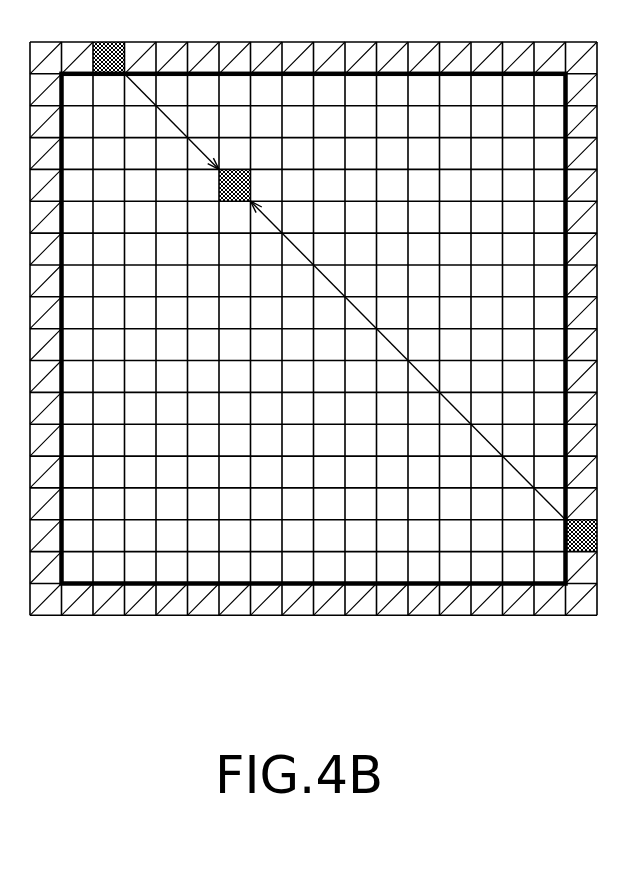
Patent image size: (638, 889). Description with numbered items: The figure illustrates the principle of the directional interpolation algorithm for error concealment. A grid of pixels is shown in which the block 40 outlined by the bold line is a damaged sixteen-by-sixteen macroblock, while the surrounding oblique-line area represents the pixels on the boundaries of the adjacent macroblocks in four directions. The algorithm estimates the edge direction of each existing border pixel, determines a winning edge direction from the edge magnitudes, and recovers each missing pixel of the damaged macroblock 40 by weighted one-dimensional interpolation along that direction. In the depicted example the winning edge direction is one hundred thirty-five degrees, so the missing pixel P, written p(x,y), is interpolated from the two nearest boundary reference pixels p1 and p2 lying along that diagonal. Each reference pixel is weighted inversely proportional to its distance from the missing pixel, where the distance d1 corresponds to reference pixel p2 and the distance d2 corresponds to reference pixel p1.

The damaged macroblock 40 is at (520, 588).
The reference pixel p1 is at (110, 42).
The reference pixel p2 is at (599, 536).
The missing pixel p(x,y) P is at (270, 173).
The distance d1 is at (408, 360).
The distance d2 is at (172, 122).